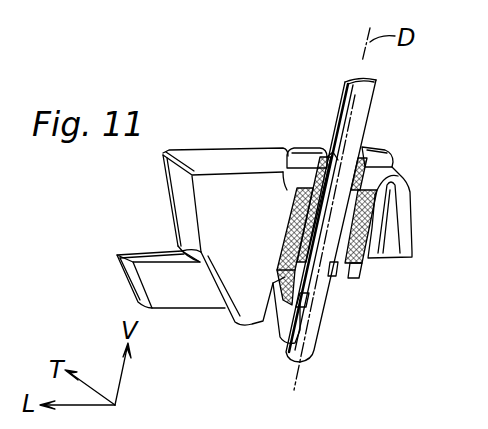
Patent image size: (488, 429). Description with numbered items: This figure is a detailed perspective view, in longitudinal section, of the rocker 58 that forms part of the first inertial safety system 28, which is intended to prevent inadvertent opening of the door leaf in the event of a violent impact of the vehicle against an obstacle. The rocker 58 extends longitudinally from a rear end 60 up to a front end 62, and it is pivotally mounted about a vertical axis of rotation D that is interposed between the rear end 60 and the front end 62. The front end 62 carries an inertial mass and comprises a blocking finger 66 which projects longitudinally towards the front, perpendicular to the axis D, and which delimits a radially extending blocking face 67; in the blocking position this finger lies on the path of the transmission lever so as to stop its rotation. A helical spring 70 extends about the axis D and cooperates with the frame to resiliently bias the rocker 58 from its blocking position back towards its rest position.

The first inertial safety system 28 is at (204, 108).
The rocker 58 is at (393, 132).
The rear end 60 is at (404, 203).
The front end 62 is at (177, 188).
The blocking finger 66 is at (120, 290).
The blocking face 67 is at (150, 257).
The helical spring 70 is at (354, 258).